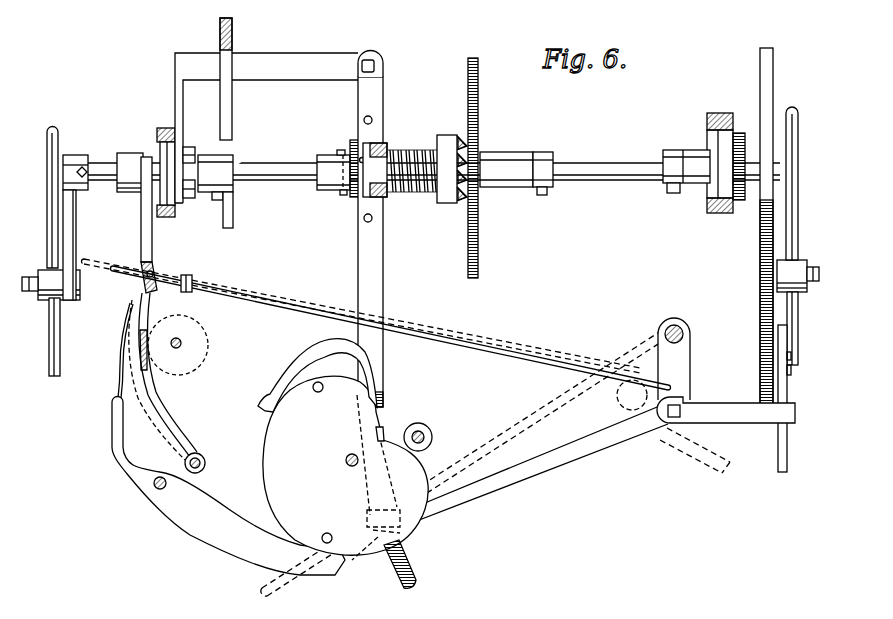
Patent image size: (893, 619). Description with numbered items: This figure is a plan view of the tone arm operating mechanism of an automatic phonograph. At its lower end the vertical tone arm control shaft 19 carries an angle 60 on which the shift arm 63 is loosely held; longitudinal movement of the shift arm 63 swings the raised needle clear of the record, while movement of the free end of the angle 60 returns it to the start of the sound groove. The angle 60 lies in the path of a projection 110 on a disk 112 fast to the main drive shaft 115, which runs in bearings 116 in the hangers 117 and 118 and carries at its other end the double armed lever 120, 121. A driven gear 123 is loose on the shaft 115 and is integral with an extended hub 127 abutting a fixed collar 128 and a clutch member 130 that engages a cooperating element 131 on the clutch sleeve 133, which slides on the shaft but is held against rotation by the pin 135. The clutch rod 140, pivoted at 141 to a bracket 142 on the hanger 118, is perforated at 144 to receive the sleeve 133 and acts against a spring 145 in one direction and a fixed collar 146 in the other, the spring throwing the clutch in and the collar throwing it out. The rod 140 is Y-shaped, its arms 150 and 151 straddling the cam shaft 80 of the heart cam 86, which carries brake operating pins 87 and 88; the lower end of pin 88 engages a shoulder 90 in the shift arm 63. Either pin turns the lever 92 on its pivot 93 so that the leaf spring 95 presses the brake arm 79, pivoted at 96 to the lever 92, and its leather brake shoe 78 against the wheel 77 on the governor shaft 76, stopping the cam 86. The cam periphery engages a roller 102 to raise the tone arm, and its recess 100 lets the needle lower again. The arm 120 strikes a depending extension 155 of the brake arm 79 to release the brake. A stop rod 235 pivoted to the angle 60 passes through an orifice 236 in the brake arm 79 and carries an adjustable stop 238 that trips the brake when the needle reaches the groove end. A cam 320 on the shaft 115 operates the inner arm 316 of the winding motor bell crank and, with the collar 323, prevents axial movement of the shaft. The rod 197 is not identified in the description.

The tone arm control shaft 19 is at (692, 331).
The angle 60 is at (691, 399).
The shift arm 63 is at (553, 468).
The governor shaft 76 is at (180, 348).
The wheel 77 is at (199, 333).
The brake shoe 78 is at (151, 312).
The brake arm 79 is at (132, 306).
The cam shaft 80 is at (349, 466).
The heart cam 86 is at (273, 489).
The brake operating pin 87 is at (318, 393).
The brake operating pin 88 is at (327, 533).
The shoulder 90 is at (396, 506).
The lever 92 is at (169, 504).
The pivot 93 is at (155, 489).
The leaf spring 95 is at (119, 379).
The pivotal connection 96 is at (199, 456).
The recess 100 is at (385, 436).
The roller 102 is at (433, 437).
The projection 110 is at (782, 473).
The disk 112 is at (762, 350).
The main drive shaft 115 is at (289, 180).
The bearings 116 is at (160, 150).
The hanger 117 is at (713, 115).
The hanger 118 is at (160, 132).
The arm of double armed lever 120 is at (142, 196).
The arm of double armed lever 121 is at (74, 246).
The driven gear 123 is at (480, 237).
The extended hub 127 is at (508, 155).
The fixed collar 128 is at (545, 155).
The clutch member 130 is at (462, 205).
The cooperating clutch element 131 is at (447, 135).
The clutch sleeve 133 is at (325, 193).
The pin 135 is at (350, 150).
The clutch rod 140 is at (379, 264).
The pivot 141 is at (385, 64).
The bracket 142 is at (318, 80).
The perforation 144 is at (381, 143).
The spring 145 is at (401, 158).
The fixed collar 146 is at (358, 154).
The arm of clutch rod 150 is at (413, 587).
The arm of clutch rod 151 is at (268, 395).
The depending extension 155 is at (142, 265).
The rod 197 is at (58, 120).
The stop rod 235 is at (505, 346).
The orifice 236 is at (153, 272).
The stop 238 is at (194, 281).
The inner arm 316 is at (234, 130).
The cam 320 is at (236, 218).
The collar 323 is at (666, 157).